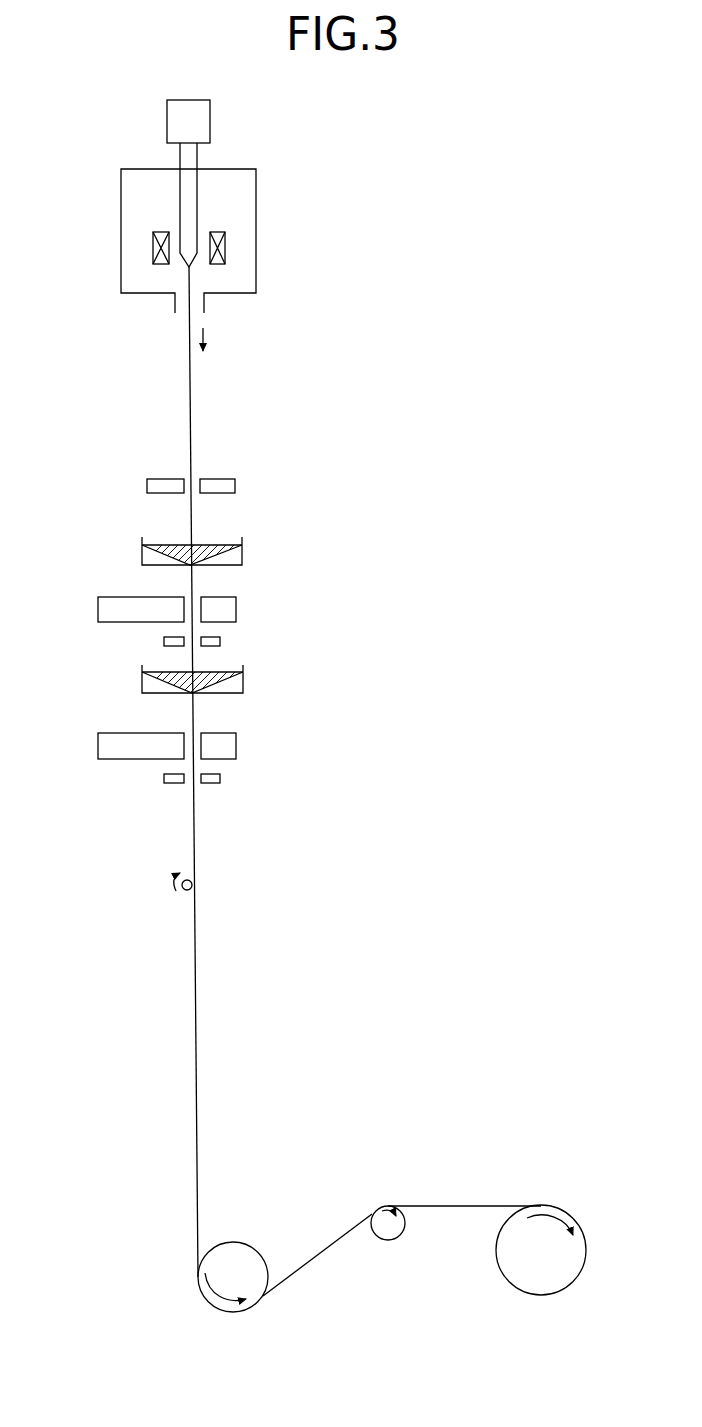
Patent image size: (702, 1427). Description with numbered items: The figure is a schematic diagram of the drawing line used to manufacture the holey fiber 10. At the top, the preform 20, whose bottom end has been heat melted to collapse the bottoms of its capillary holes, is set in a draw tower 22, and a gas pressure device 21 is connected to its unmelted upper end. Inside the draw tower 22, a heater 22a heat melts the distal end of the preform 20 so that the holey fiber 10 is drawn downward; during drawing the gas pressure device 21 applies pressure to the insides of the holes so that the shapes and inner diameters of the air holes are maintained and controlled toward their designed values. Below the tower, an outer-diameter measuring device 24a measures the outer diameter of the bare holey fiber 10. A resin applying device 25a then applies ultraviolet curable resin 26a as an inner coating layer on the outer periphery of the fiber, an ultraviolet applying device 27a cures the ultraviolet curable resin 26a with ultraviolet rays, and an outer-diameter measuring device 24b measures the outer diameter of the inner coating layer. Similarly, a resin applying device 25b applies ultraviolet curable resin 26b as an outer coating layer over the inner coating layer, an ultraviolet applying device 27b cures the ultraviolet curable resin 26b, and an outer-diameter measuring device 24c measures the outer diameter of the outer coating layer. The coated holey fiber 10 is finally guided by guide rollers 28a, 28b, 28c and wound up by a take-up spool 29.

The holey fiber 10 is at (190, 378).
The preform 20 is at (197, 197).
The gas pressure device 21 is at (210, 122).
The draw tower 22 is at (256, 278).
The heater 22a is at (225, 247).
The outer-diameter measuring device 24a is at (235, 486).
The outer-diameter measuring device 24b is at (164, 641).
The outer-diameter measuring device 24c is at (164, 778).
The resin applying device 25a is at (242, 558).
The resin applying device 25b is at (243, 683).
The ultraviolet curable resin 26a is at (223, 540).
The ultraviolet curable resin 26b is at (223, 670).
The ultraviolet applying device 27a is at (236, 610).
The ultraviolet applying device 27b is at (236, 748).
The guide roller 28a is at (182, 888).
The guide roller 28b is at (262, 1243).
The guide roller 28c is at (388, 1240).
The take-up spool 29 is at (548, 1295).